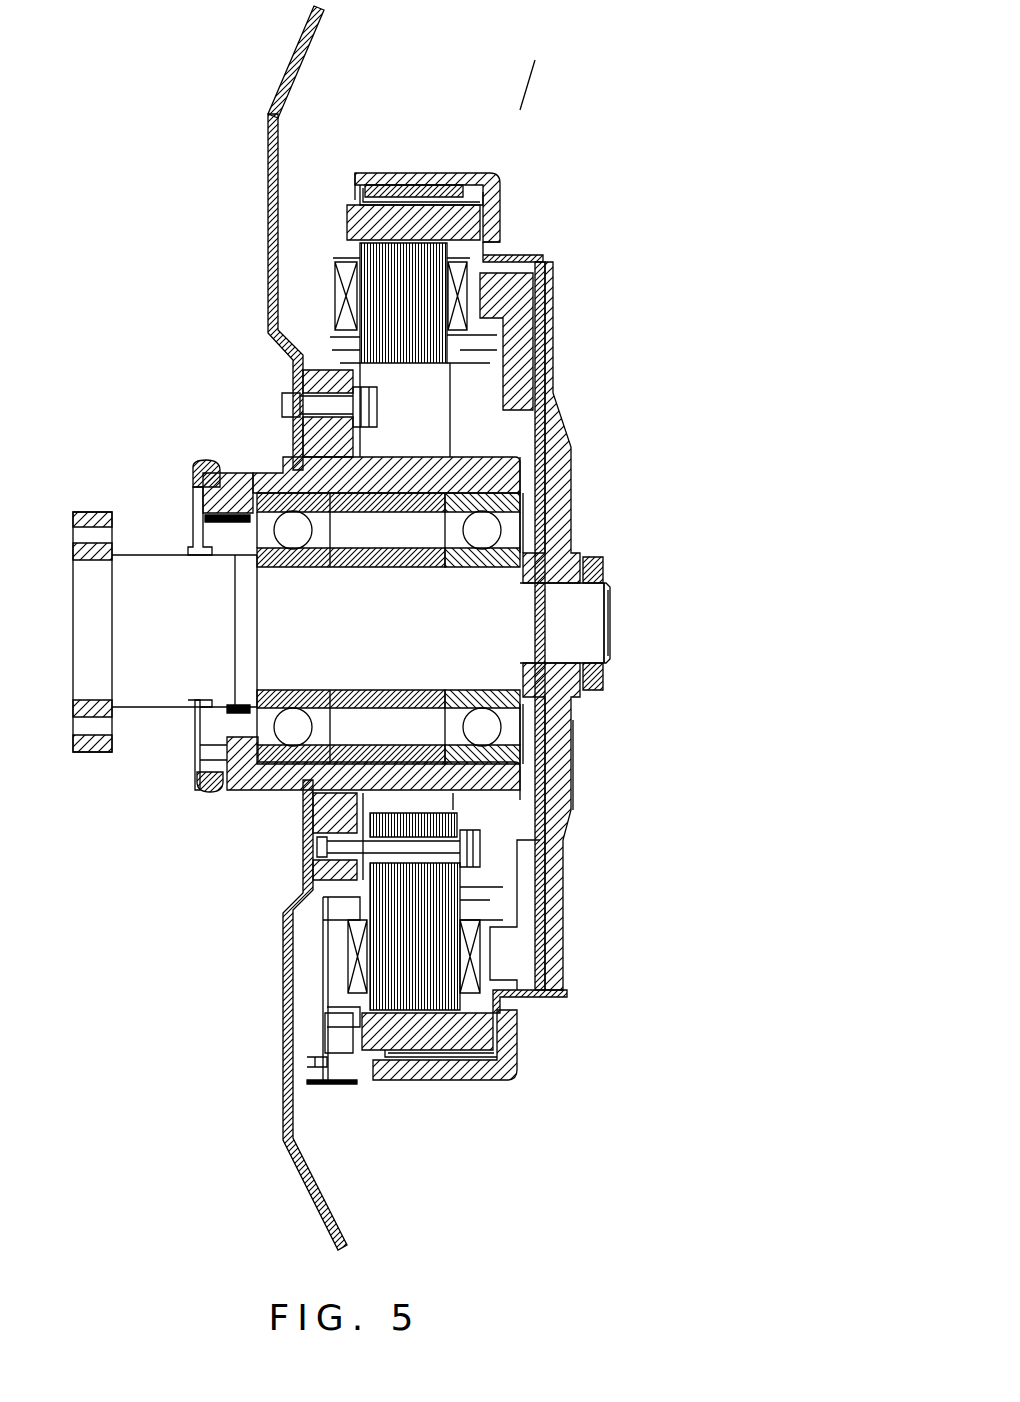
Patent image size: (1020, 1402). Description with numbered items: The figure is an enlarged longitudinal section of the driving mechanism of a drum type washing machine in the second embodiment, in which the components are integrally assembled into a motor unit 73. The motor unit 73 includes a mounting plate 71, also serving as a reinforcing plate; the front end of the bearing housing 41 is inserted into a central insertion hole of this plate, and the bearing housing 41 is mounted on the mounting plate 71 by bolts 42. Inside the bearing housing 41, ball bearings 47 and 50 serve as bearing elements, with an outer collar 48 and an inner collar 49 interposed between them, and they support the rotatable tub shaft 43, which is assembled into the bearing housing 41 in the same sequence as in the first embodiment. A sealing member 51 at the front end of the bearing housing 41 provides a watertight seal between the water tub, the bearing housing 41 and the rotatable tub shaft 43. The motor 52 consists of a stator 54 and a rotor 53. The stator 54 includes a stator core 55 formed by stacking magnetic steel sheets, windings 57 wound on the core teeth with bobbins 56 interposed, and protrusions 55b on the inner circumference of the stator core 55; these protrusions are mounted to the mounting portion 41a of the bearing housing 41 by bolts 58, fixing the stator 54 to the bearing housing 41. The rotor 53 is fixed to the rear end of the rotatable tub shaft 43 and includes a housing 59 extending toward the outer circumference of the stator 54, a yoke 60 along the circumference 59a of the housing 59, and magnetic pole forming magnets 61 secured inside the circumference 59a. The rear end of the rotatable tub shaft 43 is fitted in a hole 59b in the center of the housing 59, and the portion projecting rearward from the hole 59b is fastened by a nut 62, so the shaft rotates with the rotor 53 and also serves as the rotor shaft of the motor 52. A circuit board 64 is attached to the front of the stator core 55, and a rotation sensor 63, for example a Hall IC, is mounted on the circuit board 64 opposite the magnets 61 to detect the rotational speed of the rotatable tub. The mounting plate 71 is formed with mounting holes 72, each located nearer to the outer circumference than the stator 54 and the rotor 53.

The bearing housing 41 is at (470, 452).
The mounting portion 41a is at (320, 365).
The bolts 42 is at (380, 405).
The rotatable tub shaft 43 is at (150, 705).
The ball bearing 47 is at (250, 527).
The outer collar 48 is at (380, 568).
The inner collar 49 is at (420, 565).
The ball bearing 50 is at (520, 530).
The sealing member 51 is at (195, 532).
The motor 52 is at (505, 172).
The rotor 53 is at (508, 225).
The stator 54 is at (473, 268).
The stator core 55 is at (378, 200).
The protrusions 55b is at (465, 813).
The bobbins 56 is at (540, 313).
The windings 57 is at (465, 293).
The bolts 58 is at (540, 856).
The housing 59 is at (553, 392).
The circumference 59a is at (480, 173).
The hole 59b is at (612, 607).
The yoke 60 is at (437, 195).
The magnets 61 is at (407, 217).
The nut 62 is at (605, 560).
The rotation sensor 63 is at (355, 1055).
The circuit board 64 is at (325, 1037).
The mounting plate 71 is at (297, 77).
The mounting holes 72 is at (275, 145).
The motor unit 73 is at (520, 110).